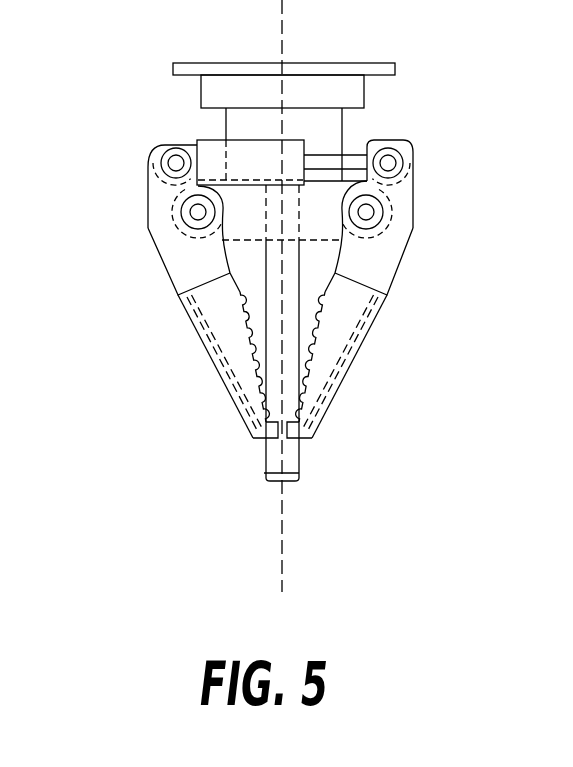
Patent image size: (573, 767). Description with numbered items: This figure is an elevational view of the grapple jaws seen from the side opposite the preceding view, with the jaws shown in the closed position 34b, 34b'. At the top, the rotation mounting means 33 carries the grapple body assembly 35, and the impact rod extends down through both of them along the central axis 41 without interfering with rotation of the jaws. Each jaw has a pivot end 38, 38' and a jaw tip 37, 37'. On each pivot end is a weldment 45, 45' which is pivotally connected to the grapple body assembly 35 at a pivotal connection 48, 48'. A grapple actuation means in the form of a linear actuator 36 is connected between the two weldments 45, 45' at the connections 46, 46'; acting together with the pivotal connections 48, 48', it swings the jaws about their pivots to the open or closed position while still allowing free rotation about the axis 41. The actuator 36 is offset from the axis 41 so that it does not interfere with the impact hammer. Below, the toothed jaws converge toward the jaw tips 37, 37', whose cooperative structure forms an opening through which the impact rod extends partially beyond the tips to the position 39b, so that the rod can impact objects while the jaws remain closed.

The rotation mounting means 33 is at (152, 83).
The grapple body assembly 35 is at (352, 122).
The linear actuator 36 is at (216, 143).
The pivot end 38 is at (157, 209).
The pivot end 38' is at (409, 206).
The actuator connection 46 is at (143, 147).
The actuator connection 46' is at (421, 148).
The pivotal connection 48 is at (149, 213).
The pivotal connection 48' is at (416, 214).
The weldment 45 is at (167, 269).
The weldment 45' is at (401, 269).
The closed position of jaw 34b is at (199, 355).
The closed position of jaw 34b' is at (376, 355).
The jaw tip 37 is at (237, 449).
The jaw tip 37' is at (334, 449).
The extended position of impact rod 39b is at (287, 479).
The axis 41 is at (282, 528).